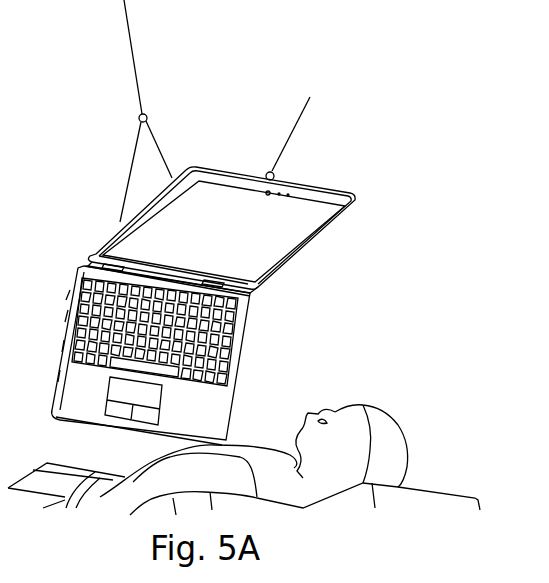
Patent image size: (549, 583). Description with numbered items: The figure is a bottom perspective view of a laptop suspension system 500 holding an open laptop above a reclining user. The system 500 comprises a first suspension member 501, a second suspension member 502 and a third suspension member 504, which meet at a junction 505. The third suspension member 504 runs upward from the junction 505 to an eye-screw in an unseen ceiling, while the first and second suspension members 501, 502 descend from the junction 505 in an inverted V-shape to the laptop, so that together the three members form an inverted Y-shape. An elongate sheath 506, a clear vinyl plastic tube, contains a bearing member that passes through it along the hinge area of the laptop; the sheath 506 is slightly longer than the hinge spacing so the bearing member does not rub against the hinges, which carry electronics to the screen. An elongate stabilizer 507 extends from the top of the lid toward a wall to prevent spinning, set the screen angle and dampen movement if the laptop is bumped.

The laptop suspension system 500 is at (413, 189).
The first suspension member 501 is at (128, 167).
The second suspension member 502 is at (171, 164).
The third suspension member 504 is at (137, 60).
The junction 505 is at (139, 118).
The elongate sheath 506 is at (213, 302).
The elongate stabilizer 507 is at (297, 135).